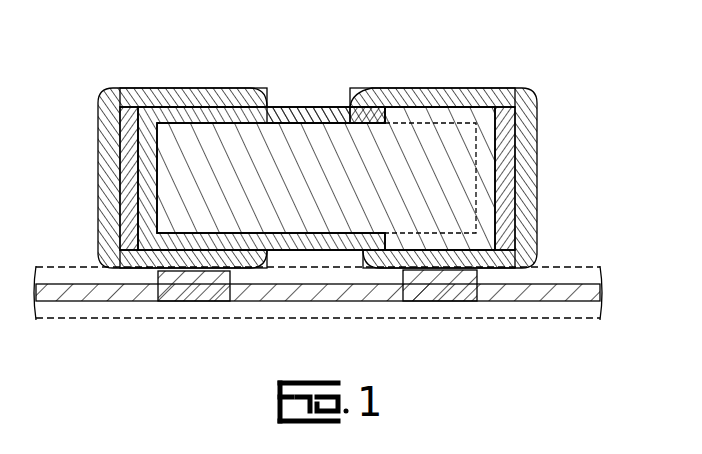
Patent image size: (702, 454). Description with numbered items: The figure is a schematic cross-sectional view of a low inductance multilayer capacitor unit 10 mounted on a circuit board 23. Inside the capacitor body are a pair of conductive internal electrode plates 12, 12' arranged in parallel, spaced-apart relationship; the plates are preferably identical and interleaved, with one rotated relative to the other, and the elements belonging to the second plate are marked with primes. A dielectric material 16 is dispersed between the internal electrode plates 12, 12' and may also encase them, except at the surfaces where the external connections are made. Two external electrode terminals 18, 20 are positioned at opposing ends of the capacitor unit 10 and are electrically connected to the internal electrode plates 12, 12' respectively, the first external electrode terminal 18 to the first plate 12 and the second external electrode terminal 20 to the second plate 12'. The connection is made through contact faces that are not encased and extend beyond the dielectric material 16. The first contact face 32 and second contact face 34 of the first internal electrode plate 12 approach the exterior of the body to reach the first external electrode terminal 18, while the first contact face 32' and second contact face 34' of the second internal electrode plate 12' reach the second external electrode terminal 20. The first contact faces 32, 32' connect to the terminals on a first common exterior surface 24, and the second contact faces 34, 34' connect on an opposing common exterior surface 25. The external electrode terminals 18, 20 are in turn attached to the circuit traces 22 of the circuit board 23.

The capacitor unit 10 is at (493, 2).
The first internal electrode plate 12 is at (326, 162).
The second internal electrode plate 12' is at (278, 178).
The dielectric material 16 is at (131, 191).
The first external electrode terminal 18 is at (520, 97).
The second external electrode terminal 20 is at (120, 90).
The circuit traces 22 is at (210, 278).
The circuit board 23 is at (289, 288).
The first common exterior surface 24 is at (319, 253).
The opposing common exterior surface 25 is at (318, 105).
The first contact face 32 is at (439, 302).
The first contact face 32' is at (193, 302).
The second contact face 34 is at (432, 77).
The second contact face 34' is at (193, 76).